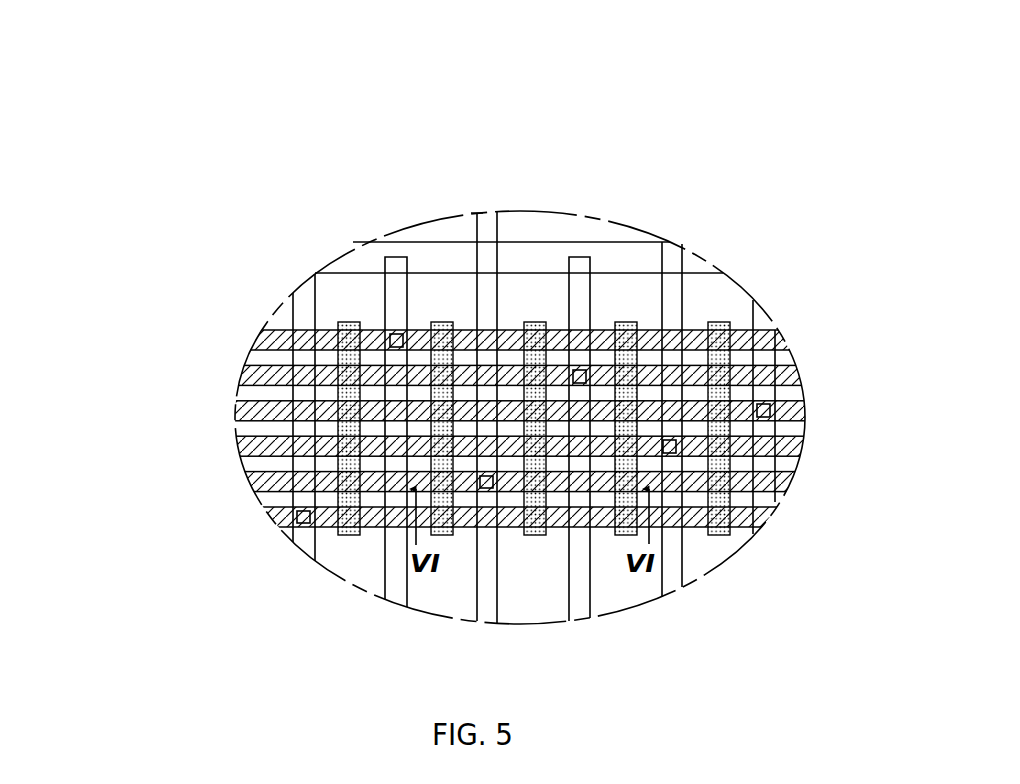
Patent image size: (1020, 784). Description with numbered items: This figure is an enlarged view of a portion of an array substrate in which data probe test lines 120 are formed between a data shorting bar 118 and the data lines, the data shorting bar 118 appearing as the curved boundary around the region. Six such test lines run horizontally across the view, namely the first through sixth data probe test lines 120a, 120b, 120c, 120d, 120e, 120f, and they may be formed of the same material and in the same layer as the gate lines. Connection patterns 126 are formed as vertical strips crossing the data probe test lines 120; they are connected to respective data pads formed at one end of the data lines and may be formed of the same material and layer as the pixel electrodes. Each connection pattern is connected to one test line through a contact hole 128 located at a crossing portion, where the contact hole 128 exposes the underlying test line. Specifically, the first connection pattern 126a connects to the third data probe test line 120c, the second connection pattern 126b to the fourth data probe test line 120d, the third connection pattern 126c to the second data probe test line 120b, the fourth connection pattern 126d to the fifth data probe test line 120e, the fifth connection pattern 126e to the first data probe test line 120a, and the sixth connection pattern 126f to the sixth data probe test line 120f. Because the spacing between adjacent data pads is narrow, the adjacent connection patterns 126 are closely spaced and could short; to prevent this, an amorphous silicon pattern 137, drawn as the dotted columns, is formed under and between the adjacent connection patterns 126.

The data shorting bar 118 is at (627, 255).
The data probe test lines 120 is at (424, 443).
The first data probe test line 120a is at (262, 338).
The second data probe test line 120b is at (250, 377).
The third data probe test line 120c is at (242, 410).
The fourth data probe test line 120d is at (244, 445).
The fifth data probe test line 120e is at (252, 481).
The sixth data probe test line 120f is at (469, 541).
The connection patterns 126 is at (777, 118).
The first connection pattern 126a is at (762, 318).
The second connection pattern 126b is at (672, 242).
The third connection pattern 126c is at (580, 257).
The fourth connection pattern 126d is at (490, 214).
The fifth connection pattern 126e is at (398, 257).
The sixth connection pattern 126f is at (294, 293).
The contact hole 128 is at (800, 409).
The amorphous silicon pattern 137 is at (538, 536).